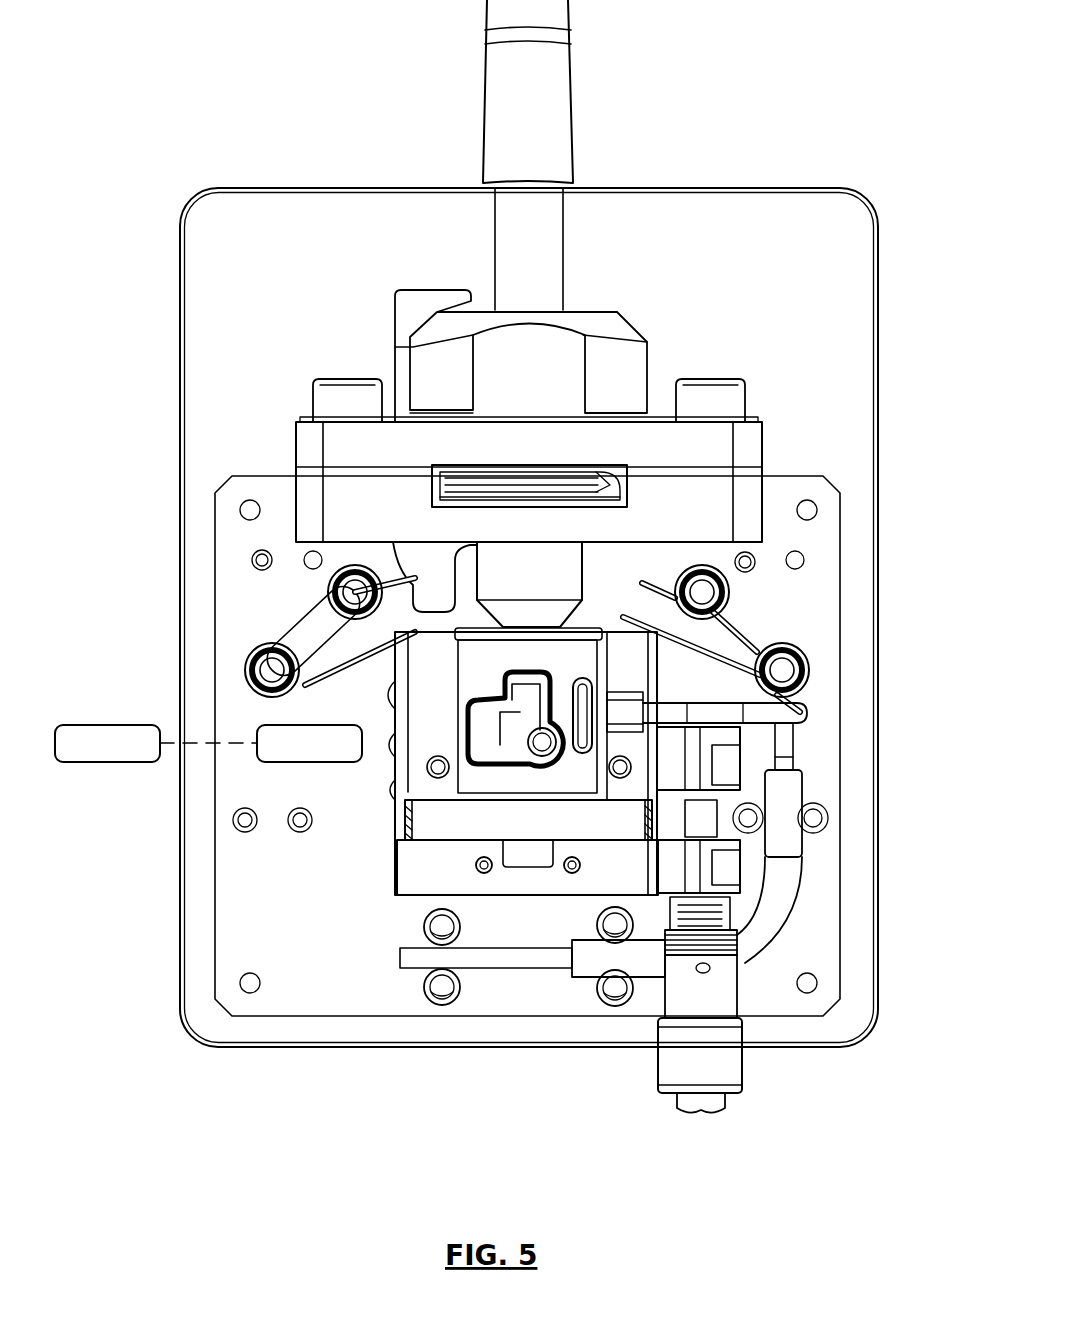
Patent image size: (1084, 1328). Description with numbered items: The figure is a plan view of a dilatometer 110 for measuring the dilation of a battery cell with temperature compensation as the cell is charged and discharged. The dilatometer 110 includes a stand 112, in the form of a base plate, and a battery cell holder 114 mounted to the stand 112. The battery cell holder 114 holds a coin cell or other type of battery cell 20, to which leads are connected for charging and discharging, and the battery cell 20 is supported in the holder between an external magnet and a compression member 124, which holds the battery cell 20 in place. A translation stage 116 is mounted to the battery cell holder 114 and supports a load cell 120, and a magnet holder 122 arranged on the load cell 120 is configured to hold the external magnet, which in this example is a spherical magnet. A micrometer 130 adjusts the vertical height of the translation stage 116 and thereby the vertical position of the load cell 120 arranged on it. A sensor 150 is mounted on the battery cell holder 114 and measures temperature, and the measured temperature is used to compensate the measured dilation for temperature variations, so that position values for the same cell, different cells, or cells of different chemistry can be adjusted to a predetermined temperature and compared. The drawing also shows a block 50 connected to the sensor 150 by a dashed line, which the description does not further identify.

The dilatometer 110 is at (260, 70).
The compression member 124 is at (558, 88).
The battery cell holder 114 is at (470, 475).
The battery cell 20 is at (430, 490).
The stand 112 is at (180, 555).
The magnet holder 122 is at (582, 568).
The load cell 120 is at (555, 663).
The sensor 150 is at (273, 725).
The remote module 50 is at (92, 724).
The translation stage 116 is at (402, 843).
The micrometer 130 is at (730, 1065).